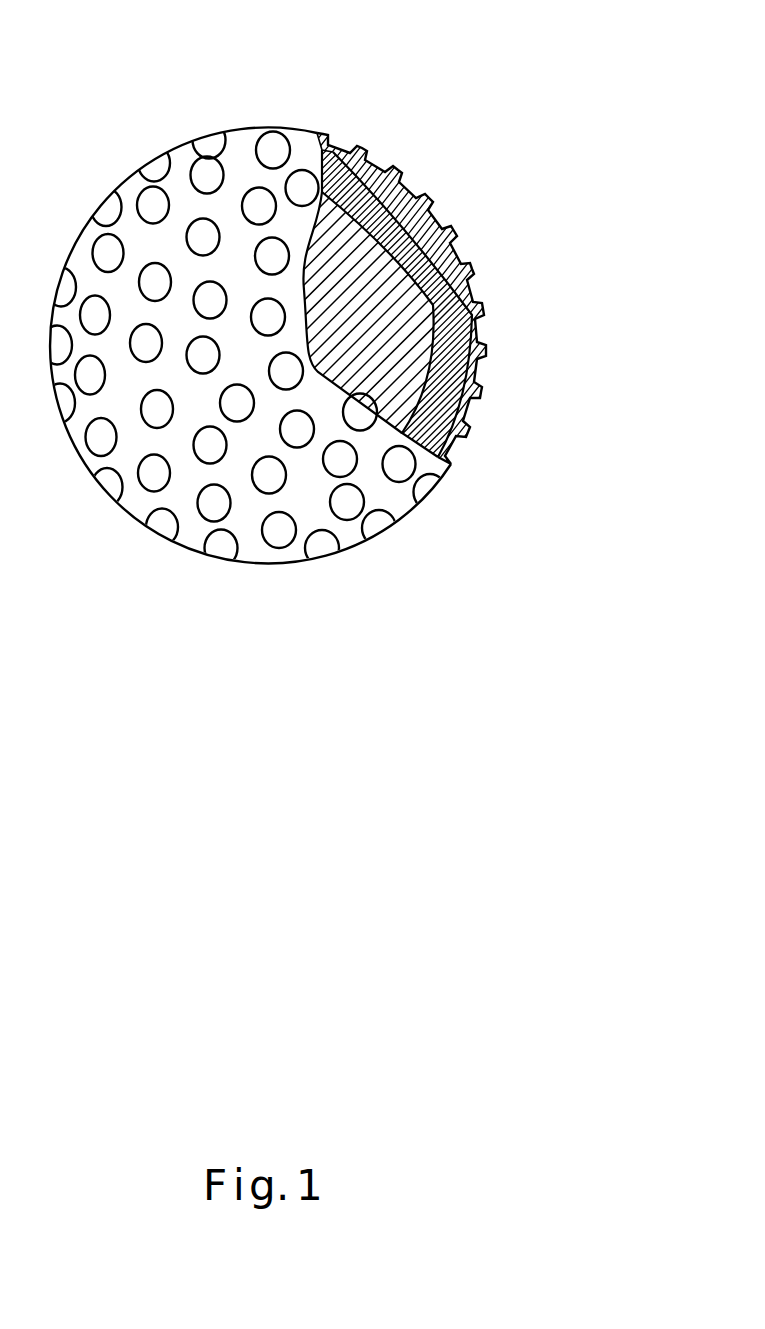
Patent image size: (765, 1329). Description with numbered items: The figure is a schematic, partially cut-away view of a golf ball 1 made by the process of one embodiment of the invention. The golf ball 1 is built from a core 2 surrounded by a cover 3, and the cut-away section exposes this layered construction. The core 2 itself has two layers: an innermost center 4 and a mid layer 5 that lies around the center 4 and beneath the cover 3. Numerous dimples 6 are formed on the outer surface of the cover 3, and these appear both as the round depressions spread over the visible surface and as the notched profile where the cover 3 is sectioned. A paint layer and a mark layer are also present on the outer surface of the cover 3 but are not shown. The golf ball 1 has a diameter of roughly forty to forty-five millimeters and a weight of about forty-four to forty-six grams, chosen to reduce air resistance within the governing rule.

The golf ball 1 is at (590, 38).
The core 2 is at (400, 297).
The cover 3 is at (465, 220).
The center 4 is at (387, 333).
The mid layer 5 is at (477, 265).
The dimples 6 is at (153, 207).